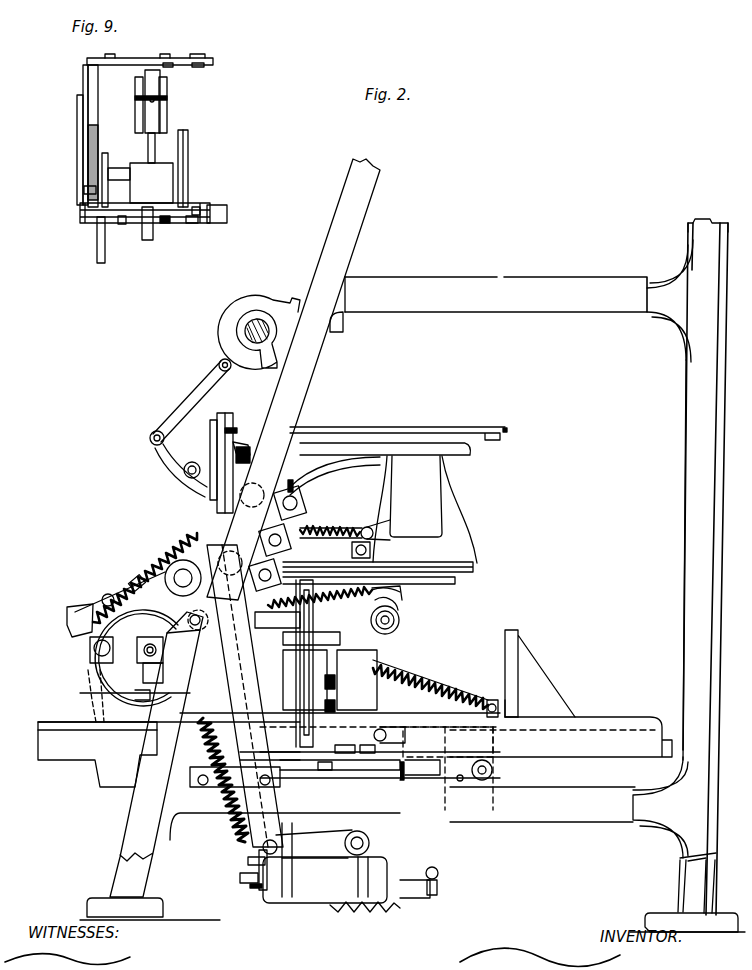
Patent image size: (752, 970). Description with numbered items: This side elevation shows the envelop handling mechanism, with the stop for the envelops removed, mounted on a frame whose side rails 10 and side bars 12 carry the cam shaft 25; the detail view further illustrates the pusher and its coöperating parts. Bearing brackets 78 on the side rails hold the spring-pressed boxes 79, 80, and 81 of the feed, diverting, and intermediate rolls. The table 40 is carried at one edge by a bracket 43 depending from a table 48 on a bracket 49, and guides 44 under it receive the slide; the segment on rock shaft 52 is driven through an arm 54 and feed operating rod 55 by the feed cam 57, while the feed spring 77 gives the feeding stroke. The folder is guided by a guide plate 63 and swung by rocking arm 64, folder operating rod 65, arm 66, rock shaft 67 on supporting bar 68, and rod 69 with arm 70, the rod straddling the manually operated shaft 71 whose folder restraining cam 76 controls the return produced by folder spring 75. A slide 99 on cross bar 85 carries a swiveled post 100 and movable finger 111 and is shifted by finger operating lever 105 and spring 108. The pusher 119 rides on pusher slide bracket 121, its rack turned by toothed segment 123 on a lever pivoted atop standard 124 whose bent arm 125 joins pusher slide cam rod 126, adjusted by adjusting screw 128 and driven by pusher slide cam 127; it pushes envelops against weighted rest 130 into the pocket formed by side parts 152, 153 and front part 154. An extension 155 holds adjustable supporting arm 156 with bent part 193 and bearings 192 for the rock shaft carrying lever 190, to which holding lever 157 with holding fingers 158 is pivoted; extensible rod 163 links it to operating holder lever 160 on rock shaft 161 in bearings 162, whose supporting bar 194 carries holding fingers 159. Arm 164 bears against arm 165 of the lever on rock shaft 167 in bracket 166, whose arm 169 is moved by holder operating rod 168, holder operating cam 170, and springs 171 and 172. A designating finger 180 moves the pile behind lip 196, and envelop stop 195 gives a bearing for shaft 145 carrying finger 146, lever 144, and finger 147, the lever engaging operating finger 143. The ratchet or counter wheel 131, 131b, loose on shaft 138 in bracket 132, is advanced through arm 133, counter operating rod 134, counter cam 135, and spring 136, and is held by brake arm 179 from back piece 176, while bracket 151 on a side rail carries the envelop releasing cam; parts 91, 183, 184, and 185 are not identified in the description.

In FIG. 2, the side rails 10 is at (365, 216).
In FIG. 2, the side bars 12 is at (570, 815).
In FIG. 2, the cam shaft 25 is at (165, 560).
In FIG. 2, the table 40 is at (470, 562).
In FIG. 2, the bracket 43 is at (462, 524).
In FIG. 2, the guides 44 is at (445, 580).
In FIG. 2, the table 48 is at (506, 430).
In FIG. 2, the bracket 49 is at (425, 445).
In FIG. 2, the rock shaft 52 is at (394, 625).
In FIG. 2, the arm 54 is at (400, 612).
In FIG. 2, the feed operating rod 55 is at (376, 618).
In FIG. 2, the feed cam 57 is at (165, 572).
In FIG. 2, the guide plate 63 is at (325, 527).
In FIG. 2, the rocking arm 64 is at (375, 533).
In FIG. 2, the folder operating rod 65 is at (375, 530).
In FIG. 2, the arm 66 is at (180, 490).
In FIG. 2, the rock shaft 67 is at (215, 450).
In FIG. 2, the supporting bar 68 is at (250, 452).
In FIG. 2, the rod 69 is at (182, 395).
In FIG. 2, the arm 70 is at (160, 448).
In FIG. 2, the manually operated shaft 71 is at (266, 334).
In FIG. 2, the folder spring 75 is at (333, 530).
In FIG. 2, the folder restraining cam 76 is at (235, 312).
In FIG. 2, the feed spring 77 is at (332, 632).
In FIG. 2, the bearing brackets 78 is at (295, 480).
In FIG. 2, the box 79 is at (300, 478).
In FIG. 2, the box 80 is at (300, 525).
In FIG. 2, the box 81 is at (228, 578).
In FIG. 2, the cross bar 85 is at (135, 695).
In FIG. 2, the rod 91 is at (350, 535).
In FIG. 2, the slide 99 is at (158, 672).
In FIG. 2, the post 100 is at (138, 655).
In FIG. 2, the finger operating lever 105 is at (230, 432).
In FIG. 2, the spring 108 is at (250, 455).
In FIG. 2, the movable finger 111 is at (163, 655).
In FIG. 2, the pusher 119 is at (262, 622).
In FIG. 2, the pusher slide bracket 121 is at (100, 752).
In FIG. 2, the toothed segment 123 is at (92, 690).
In FIG. 2, the standard 124 is at (60, 718).
In FIG. 2, the bent arm 125 is at (88, 645).
In FIG. 2, the pusher slide cam rod 126 is at (85, 612).
In FIG. 2, the pusher slide cam 127 is at (135, 580).
In FIG. 2, the adjusting screw 128 is at (108, 598).
In FIG. 2, the weighted rest 130 is at (543, 680).
In FIG. 2, the ratchet or counter wheel 131 is at (178, 760).
In FIG. 2, the break line 131b is at (378, 910).
In FIG. 2, the bracket 132 is at (315, 895).
In FIG. 2, the arm 133 is at (325, 852).
In FIG. 2, the counter operating rod 134 is at (252, 860).
In FIG. 2, the counter cam 135 is at (135, 560).
In FIG. 2, the spring 136 is at (222, 818).
In FIG. 2, the shaft 138 is at (355, 850).
In FIG. 2, the operating finger 143 is at (256, 886).
In FIG. 2, the lever 144 is at (240, 878).
In FIG. 9, the shaft 145 is at (99, 260).
In FIG. 2, the shaft 145 is at (258, 845).
In FIG. 9, the finger 146 is at (130, 168).
In FIG. 2, the finger 147 is at (185, 752).
In FIG. 2, the bracket 151 is at (400, 600).
In FIG. 9, the side part 152 is at (85, 190).
In FIG. 2, the side part 152 is at (372, 745).
In FIG. 9, the side part 153 is at (190, 152).
In FIG. 2, the side part 153 is at (378, 654).
In FIG. 9, the front part 154 is at (228, 222).
In FIG. 9, the extension 155 is at (78, 128).
In FIG. 2, the extension 155 is at (314, 652).
In FIG. 9, the supporting arm 156 is at (97, 100).
In FIG. 2, the supporting arm 156 is at (314, 680).
In FIG. 9, the holding lever 157 is at (84, 72).
In FIG. 2, the holding lever 157 is at (368, 549).
In FIG. 9, the holding fingers 158 is at (170, 78).
In FIG. 2, the holding fingers 158 is at (318, 600).
In FIG. 9, the holding fingers 159 is at (165, 223).
In FIG. 2, the holding fingers 159 is at (345, 748).
In FIG. 9, the operating holder lever 160 is at (78, 220).
In FIG. 2, the operating holder lever 160 is at (360, 775).
In FIG. 9, the rock shaft 161 is at (205, 223).
In FIG. 2, the rock shaft 161 is at (381, 728).
In FIG. 9, the bearings 162 is at (195, 210).
In FIG. 9, the extensible rod 163 is at (87, 145).
In FIG. 2, the extensible rod 163 is at (336, 685).
In FIG. 9, the arm 164 is at (148, 235).
In FIG. 2, the arm 164 is at (445, 735).
In FIG. 2, the arm 165 is at (433, 775).
In FIG. 2, the bracket 166 is at (460, 782).
In FIG. 2, the rock shaft 167 is at (492, 770).
In FIG. 2, the holder operating rod 168 is at (440, 683).
In FIG. 2, the arm 169 is at (512, 710).
In FIG. 2, the holder operating cam 170 is at (292, 655).
In FIG. 2, the spring 171 is at (410, 672).
In FIG. 2, the spring 172 is at (440, 830).
In FIG. 2, the back piece 176 is at (440, 878).
In FIG. 2, the brake arm 179 is at (432, 895).
In FIG. 2, the designating finger 180 is at (262, 760).
In FIG. 2, the plate 183 is at (330, 735).
In FIG. 2, the block 184 is at (325, 770).
In FIG. 2, the screw 185 is at (300, 775).
In FIG. 9, the lever 190 is at (86, 60).
In FIG. 9, the bearings 192 is at (200, 58).
In FIG. 9, the bent part 193 is at (180, 58).
In FIG. 9, the supporting bar 194 is at (125, 226).
In FIG. 9, the envelop stop 195 is at (107, 172).
In FIG. 9, the lip 196 is at (182, 168).